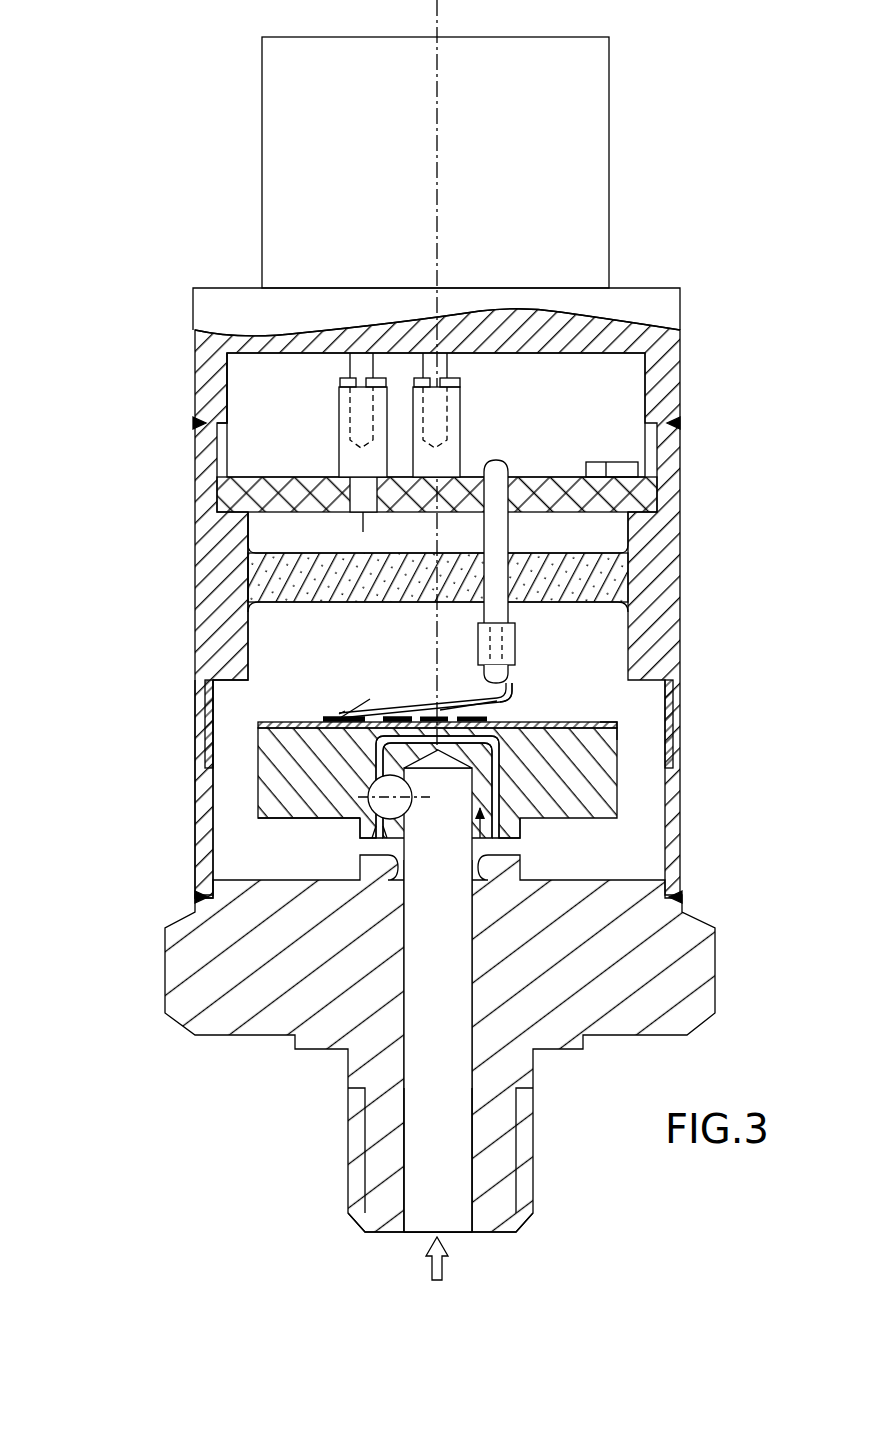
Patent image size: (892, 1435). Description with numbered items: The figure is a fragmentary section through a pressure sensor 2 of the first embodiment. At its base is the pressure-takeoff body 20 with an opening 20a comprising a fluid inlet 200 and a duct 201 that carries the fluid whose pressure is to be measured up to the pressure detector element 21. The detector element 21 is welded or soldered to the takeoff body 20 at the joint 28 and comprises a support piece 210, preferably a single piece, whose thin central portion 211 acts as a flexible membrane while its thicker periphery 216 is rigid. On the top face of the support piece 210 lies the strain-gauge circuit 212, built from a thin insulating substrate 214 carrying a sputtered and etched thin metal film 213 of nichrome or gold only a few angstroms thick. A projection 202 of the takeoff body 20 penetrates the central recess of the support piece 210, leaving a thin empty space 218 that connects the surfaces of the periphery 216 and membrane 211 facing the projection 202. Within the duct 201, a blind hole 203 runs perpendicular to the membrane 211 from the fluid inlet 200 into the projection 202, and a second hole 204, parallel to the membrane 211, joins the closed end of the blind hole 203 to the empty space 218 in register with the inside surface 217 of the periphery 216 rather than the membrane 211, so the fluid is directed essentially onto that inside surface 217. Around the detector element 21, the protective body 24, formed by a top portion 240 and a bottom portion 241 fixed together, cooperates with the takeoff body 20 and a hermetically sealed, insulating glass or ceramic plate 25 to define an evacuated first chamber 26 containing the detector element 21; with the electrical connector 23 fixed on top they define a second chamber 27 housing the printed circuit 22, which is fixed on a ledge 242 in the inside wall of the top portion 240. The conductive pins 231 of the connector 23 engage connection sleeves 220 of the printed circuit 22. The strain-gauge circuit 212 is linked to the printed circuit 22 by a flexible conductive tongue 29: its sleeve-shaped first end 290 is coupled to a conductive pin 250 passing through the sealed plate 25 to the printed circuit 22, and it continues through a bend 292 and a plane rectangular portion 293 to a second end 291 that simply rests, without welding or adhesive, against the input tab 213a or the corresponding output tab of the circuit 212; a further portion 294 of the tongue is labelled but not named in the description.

The pressure sensor 2 is at (702, 145).
The pressure-takeoff body 20 is at (695, 970).
The opening 20a is at (405, 1238).
The fluid inlet 200 is at (463, 1232).
The duct 201 is at (457, 1152).
The projection 202 is at (480, 840).
The blind hole 203 is at (423, 1113).
The second hole 204 is at (438, 991).
The pressure detector element 21 is at (396, 943).
The support piece 210 is at (610, 762).
The thin central portion 211 is at (380, 767).
The strain-gauge circuit 212 is at (636, 674).
The thin metal film 213 is at (467, 715).
The input tab 213a is at (327, 720).
The thin insulating substrate 214 is at (627, 724).
The periphery 216 is at (295, 798).
The inside surface 217 is at (410, 805).
The empty space 218 is at (383, 797).
The printed circuit 22 is at (630, 498).
The connection sleeves 220 is at (348, 452).
The electrical connector 23 is at (613, 127).
The conductive pins 231 is at (457, 365).
The protective body 24 is at (172, 776).
The top portion 240 is at (215, 600).
The bottom portion 241 is at (200, 815).
The ledge 242 is at (247, 515).
The hermetically sealed plate 25 is at (262, 560).
The conductive pin 250 is at (505, 535).
The first chamber 26 is at (237, 750).
The second chamber 27 is at (243, 388).
The welded or soldered joint 28 is at (372, 838).
The flexible tongue 29 is at (408, 700).
The first end 290 is at (515, 636).
The second end 291 is at (343, 713).
The bend 292 is at (620, 665).
The plane rectangular portion 293 is at (447, 710).
The spring tip 294 is at (342, 718).